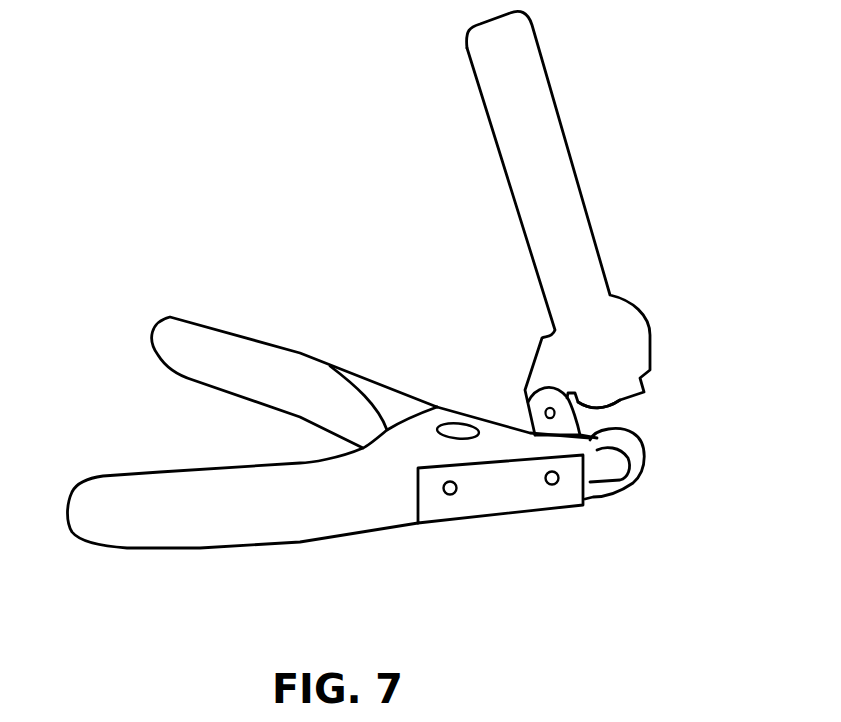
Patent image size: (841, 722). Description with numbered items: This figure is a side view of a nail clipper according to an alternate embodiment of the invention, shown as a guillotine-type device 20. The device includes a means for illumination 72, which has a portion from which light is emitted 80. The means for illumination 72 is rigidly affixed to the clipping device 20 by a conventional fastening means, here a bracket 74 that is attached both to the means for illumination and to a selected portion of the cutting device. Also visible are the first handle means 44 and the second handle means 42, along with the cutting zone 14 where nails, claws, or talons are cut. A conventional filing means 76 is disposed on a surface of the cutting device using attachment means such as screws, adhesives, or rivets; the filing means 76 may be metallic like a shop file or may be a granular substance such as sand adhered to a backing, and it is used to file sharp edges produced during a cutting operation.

The guillotine-type device 20 is at (323, 202).
The means for illumination 72 is at (558, 202).
The bracket 74 is at (545, 411).
The first handle means 44 is at (245, 358).
The second handle means 42 is at (157, 528).
The filing means 76 is at (498, 480).
The cutting zone 14 is at (612, 462).
The portion from which light is emitted 80 is at (620, 400).